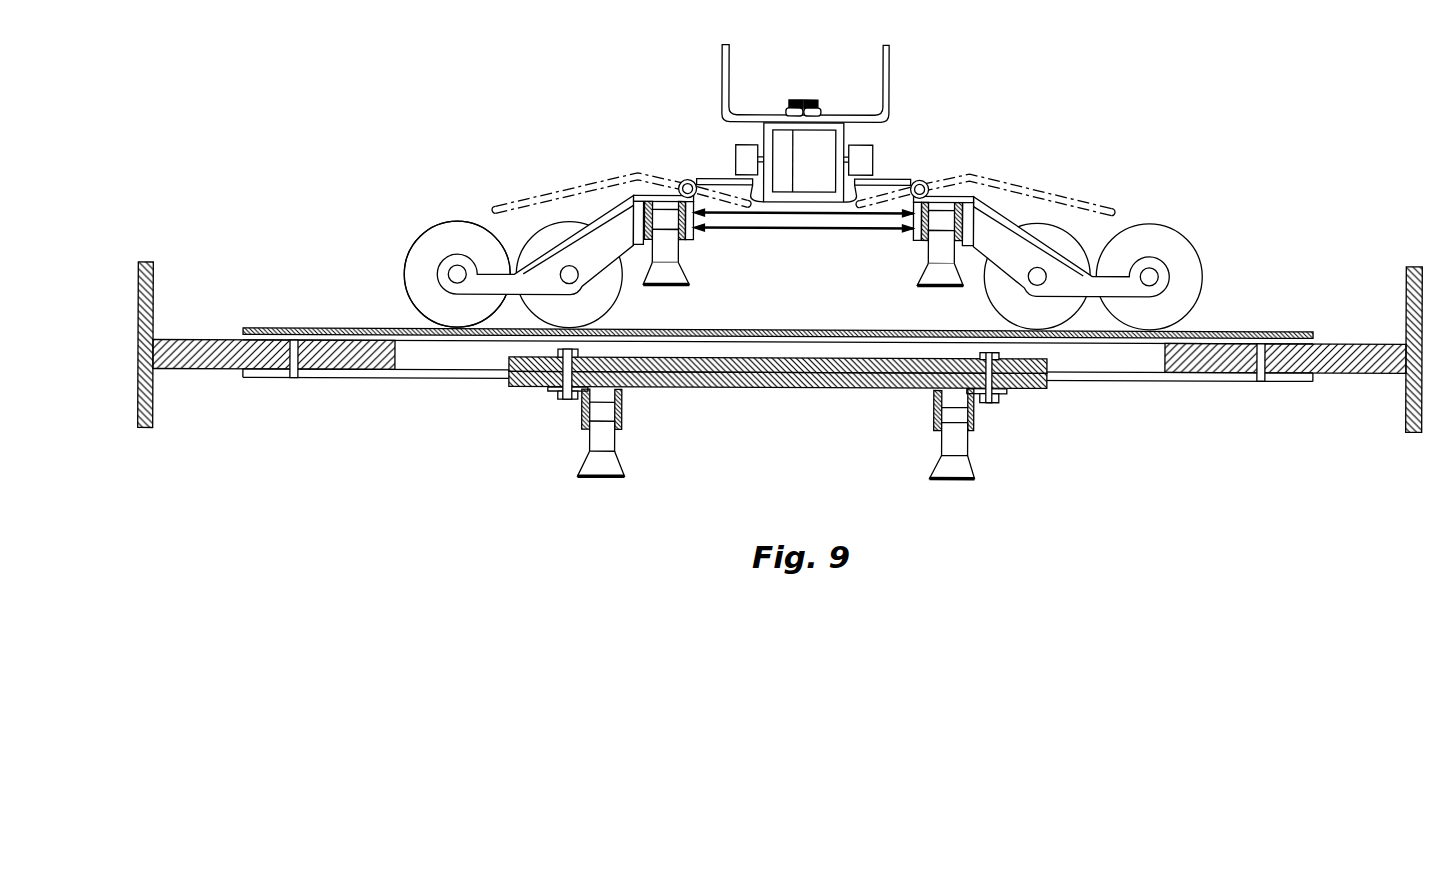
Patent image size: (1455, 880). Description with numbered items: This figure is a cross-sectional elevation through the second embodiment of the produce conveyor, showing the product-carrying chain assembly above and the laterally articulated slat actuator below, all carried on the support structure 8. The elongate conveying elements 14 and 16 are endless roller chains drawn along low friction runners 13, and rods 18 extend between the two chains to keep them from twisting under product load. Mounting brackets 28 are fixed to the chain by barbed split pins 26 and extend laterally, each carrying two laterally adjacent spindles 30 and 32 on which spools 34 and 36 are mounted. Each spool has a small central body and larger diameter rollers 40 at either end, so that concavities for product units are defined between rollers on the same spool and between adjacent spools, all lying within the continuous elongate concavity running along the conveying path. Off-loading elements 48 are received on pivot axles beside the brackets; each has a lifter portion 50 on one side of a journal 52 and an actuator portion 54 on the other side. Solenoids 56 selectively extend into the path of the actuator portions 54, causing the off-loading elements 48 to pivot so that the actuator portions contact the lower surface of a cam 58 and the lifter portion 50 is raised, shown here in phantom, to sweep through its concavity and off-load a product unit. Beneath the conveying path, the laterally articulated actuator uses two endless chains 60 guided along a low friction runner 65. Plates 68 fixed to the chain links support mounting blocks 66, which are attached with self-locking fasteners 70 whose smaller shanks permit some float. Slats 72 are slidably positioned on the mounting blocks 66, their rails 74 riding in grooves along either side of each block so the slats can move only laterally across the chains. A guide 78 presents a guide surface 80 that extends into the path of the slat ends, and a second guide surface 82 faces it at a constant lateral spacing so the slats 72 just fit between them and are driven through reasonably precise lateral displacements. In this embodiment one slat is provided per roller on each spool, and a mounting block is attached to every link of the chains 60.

The support structure 8 is at (889, 79).
The low friction runners 13 is at (663, 232).
The elongate conveying element 14 is at (682, 248).
The elongate conveying element 16 is at (943, 238).
The rods 18 is at (803, 222).
The barbed split pins 26 is at (705, 223).
The mounting brackets 28 is at (628, 262).
The spindle 30 is at (566, 268).
The spindle 32 is at (460, 267).
The spool 34 is at (622, 293).
The spool 36 is at (404, 268).
The rollers 40 is at (441, 226).
The off-loading elements 48 is at (978, 200).
The lifter portion 50 is at (604, 205).
The journal 52 is at (683, 183).
The actuator portion 54 is at (696, 182).
The solenoids 56 is at (874, 158).
The cam 58 is at (893, 178).
The endless chains 60 is at (622, 438).
The low friction runner 65 is at (617, 450).
The mounting blocks 66 is at (510, 390).
The plates 68 is at (553, 392).
The fasteners 70 is at (569, 404).
The slats 72 is at (305, 329).
The rails 74 is at (427, 378).
The guide 78 is at (1423, 308).
The guide surface 80 is at (154, 292).
The second guide surface 82 is at (1406, 283).